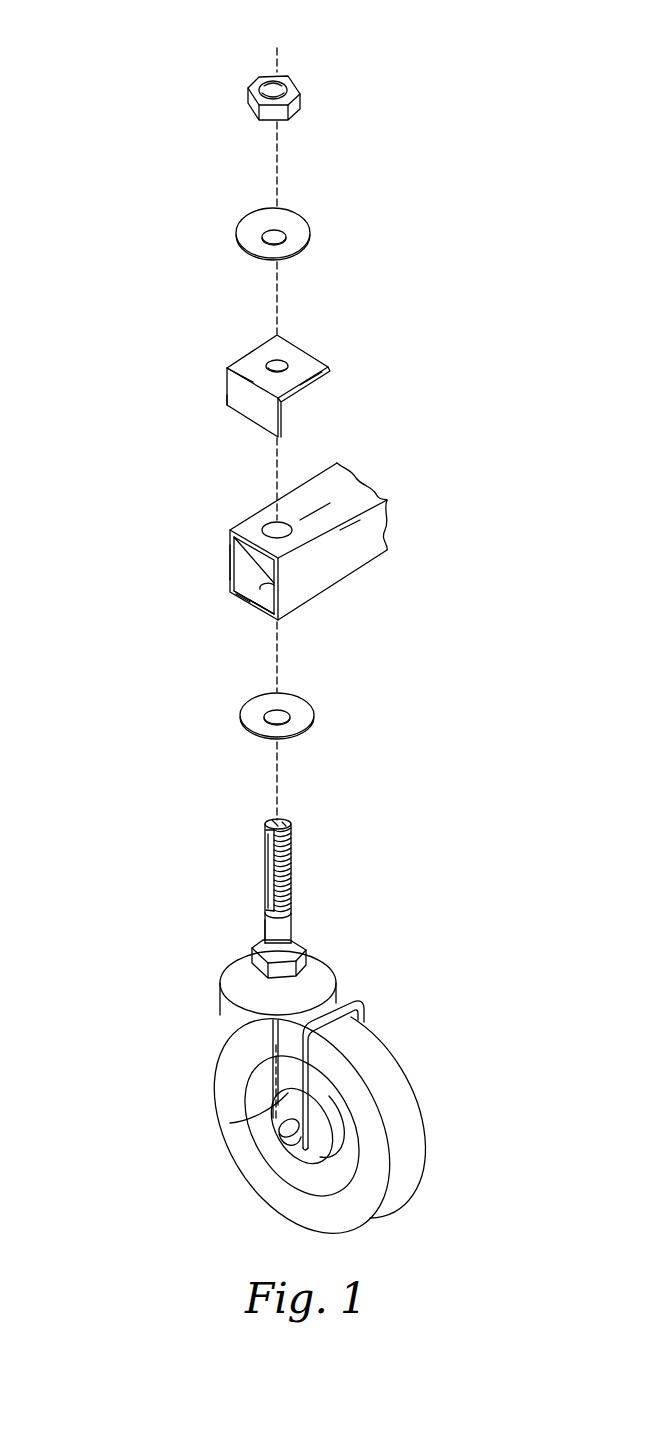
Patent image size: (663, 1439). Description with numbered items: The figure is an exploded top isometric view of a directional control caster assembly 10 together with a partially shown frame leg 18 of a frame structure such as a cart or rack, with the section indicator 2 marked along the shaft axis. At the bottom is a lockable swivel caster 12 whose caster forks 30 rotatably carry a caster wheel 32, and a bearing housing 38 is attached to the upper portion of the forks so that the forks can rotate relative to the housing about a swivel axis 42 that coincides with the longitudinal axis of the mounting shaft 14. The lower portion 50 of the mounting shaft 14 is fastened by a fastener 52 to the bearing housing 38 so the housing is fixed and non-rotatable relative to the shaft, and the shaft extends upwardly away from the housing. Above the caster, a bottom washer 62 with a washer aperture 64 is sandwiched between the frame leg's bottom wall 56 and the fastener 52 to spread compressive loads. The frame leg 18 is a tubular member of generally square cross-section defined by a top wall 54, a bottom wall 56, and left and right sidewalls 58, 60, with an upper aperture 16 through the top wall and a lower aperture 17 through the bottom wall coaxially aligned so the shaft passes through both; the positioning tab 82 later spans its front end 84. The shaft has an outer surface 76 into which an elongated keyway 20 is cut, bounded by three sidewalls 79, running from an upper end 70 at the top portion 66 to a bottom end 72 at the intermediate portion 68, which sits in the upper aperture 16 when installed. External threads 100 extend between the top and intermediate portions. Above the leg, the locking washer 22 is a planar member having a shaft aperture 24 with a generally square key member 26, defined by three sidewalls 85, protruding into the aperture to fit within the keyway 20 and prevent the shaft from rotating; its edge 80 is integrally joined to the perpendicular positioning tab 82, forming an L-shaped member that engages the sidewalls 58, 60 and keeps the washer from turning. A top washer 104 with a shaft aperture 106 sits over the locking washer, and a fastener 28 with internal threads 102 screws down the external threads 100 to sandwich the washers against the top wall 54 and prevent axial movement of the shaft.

The section line 2- 2 is at (275, 45).
The directional control caster assembly 10 is at (416, 166).
The lockable swivel caster 12 is at (365, 1018).
The mounting shaft 14 is at (254, 858).
The upper aperture 16 is at (266, 524).
The lower aperture 17 is at (236, 591).
The frame leg 18 is at (352, 573).
The keyway 20 is at (265, 877).
The locking washer 22 is at (324, 372).
The shaft aperture 24 is at (290, 362).
The key member 26 is at (270, 362).
The fastener 28 is at (300, 92).
The caster forks 30 is at (231, 1123).
The caster wheel 32 is at (390, 1080).
The bearing housing 38 is at (318, 988).
The swivel axis 42 is at (277, 783).
The lower portion 50 is at (306, 957).
The fastener 52 is at (284, 947).
The top wall 54 is at (367, 482).
The bottom wall 56 is at (248, 607).
The left sidewall 58 is at (228, 558).
The right sidewall 60 is at (377, 525).
The bottom washer 62 is at (307, 713).
The washer aperture 64 is at (284, 713).
The top portion 66 is at (273, 823).
The intermediate portion 68 is at (288, 892).
The upper end 70 is at (265, 843).
The bottom end 72 is at (265, 898).
The outer surface 76 is at (273, 932).
The sidewalls 79 is at (265, 856).
The edge 80 is at (253, 382).
The positioning tab 82 is at (227, 398).
The front end 84 is at (241, 601).
The sidewalls 85 is at (322, 368).
The external threads 100 is at (291, 853).
The internal threads 102 is at (281, 78).
The top washer 104 is at (300, 231).
The shaft aperture 106 is at (279, 231).